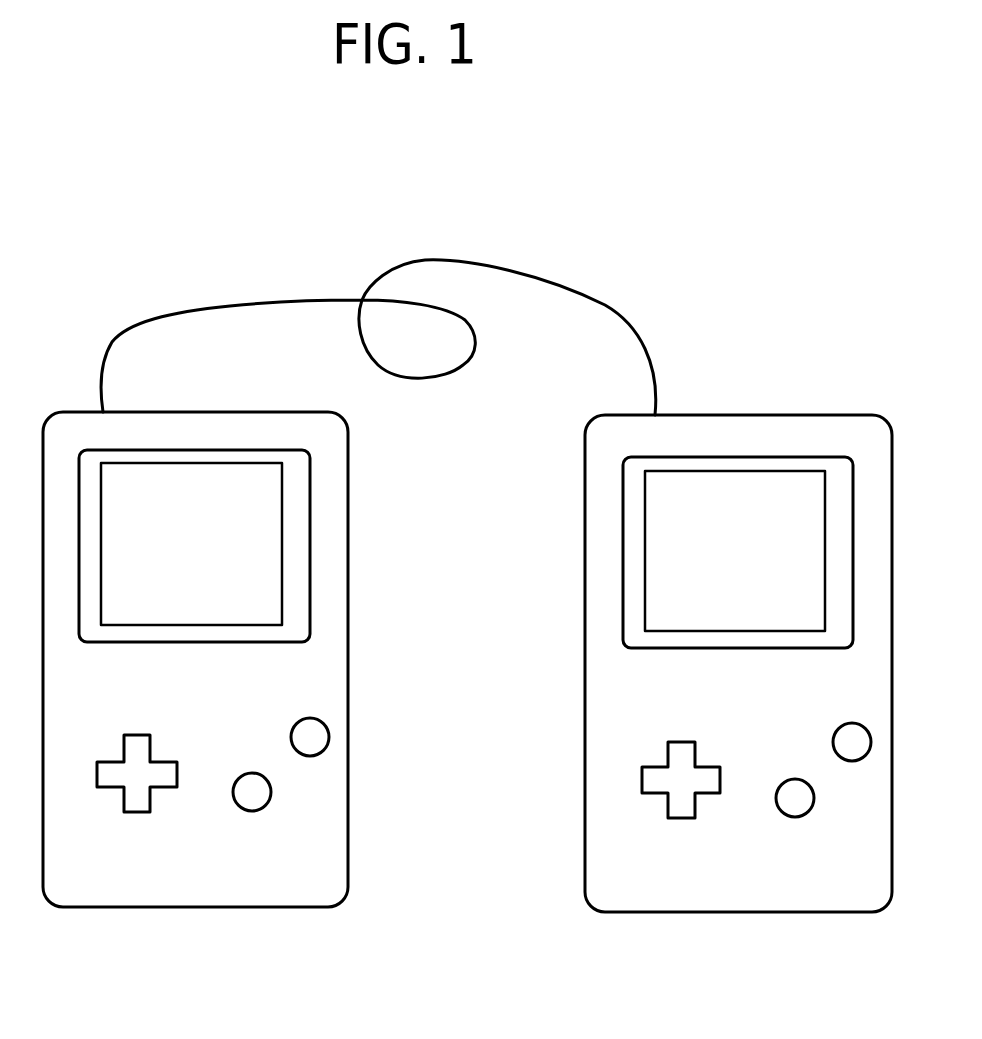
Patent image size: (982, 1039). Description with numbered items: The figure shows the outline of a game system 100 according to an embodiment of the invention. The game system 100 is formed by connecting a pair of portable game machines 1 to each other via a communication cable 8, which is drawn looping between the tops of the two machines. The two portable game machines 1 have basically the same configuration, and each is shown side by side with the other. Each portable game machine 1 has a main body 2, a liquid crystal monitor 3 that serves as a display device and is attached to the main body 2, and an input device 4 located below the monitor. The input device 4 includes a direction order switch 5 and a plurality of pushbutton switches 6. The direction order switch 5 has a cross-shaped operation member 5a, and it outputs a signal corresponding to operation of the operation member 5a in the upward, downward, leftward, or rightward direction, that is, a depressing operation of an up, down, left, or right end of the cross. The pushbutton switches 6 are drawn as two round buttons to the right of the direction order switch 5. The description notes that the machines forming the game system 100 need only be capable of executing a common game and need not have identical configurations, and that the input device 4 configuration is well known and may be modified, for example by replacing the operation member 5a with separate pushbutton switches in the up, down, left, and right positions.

The game system 100 is at (698, 263).
The portable game machine 1 is at (467, 687).
The main body 2 is at (285, 420).
The liquid crystal monitor 3 is at (197, 465).
The input device 4 is at (479, 873).
The direction order switch 5 is at (404, 851).
The operation member 5a is at (132, 797).
The pushbutton switch 6 is at (310, 740).
The communication cable 8 is at (625, 315).